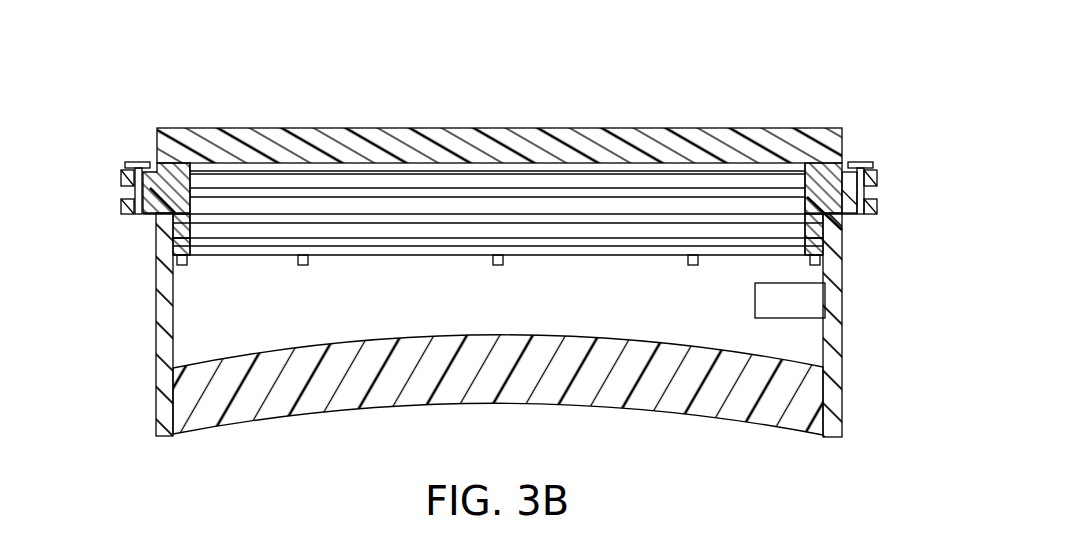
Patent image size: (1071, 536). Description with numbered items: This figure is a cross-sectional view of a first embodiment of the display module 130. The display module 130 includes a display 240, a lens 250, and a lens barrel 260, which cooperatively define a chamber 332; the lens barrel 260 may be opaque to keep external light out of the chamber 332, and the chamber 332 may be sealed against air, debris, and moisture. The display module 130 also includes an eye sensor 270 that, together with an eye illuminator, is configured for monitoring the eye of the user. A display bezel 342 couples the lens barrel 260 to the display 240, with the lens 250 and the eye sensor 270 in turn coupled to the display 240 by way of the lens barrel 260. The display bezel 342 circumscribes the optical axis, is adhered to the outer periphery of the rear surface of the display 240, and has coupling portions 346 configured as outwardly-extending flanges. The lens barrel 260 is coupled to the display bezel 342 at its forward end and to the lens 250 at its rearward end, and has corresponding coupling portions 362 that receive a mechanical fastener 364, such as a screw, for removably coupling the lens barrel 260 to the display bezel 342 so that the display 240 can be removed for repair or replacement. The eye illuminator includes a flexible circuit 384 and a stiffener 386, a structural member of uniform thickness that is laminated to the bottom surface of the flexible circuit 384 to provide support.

The display module 130 is at (503, 233).
The display 240 is at (842, 136).
The lens 250 is at (790, 358).
The lens barrel 260 is at (842, 407).
The eye sensor 270 is at (774, 313).
The chamber 332 is at (545, 272).
The display bezel 342 is at (877, 179).
The coupling portions 346 is at (120, 176).
The coupling portions 362 is at (120, 206).
The mechanical fastener 364 is at (142, 162).
The flexible circuit 384 is at (823, 250).
The stiffener 386 is at (822, 228).